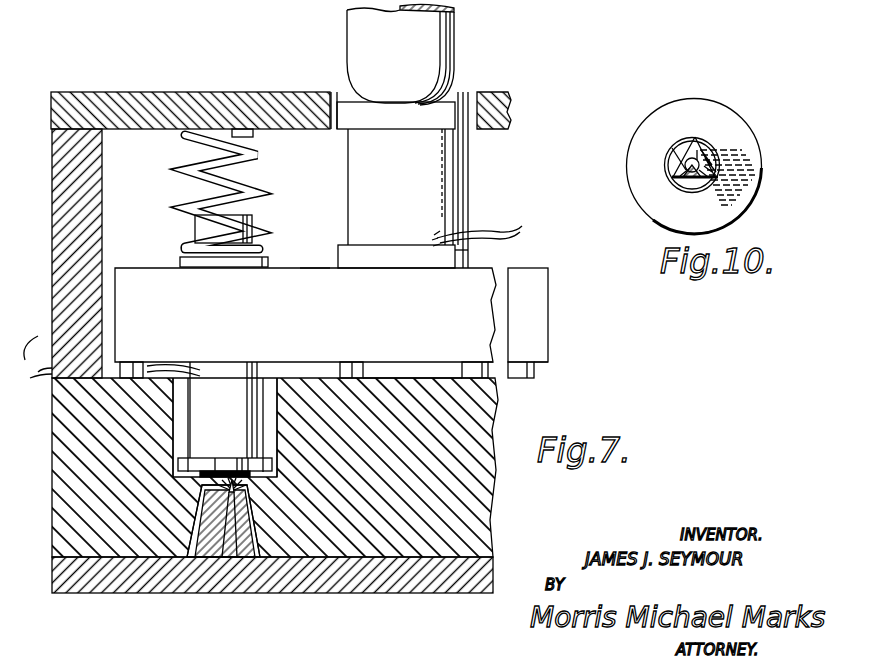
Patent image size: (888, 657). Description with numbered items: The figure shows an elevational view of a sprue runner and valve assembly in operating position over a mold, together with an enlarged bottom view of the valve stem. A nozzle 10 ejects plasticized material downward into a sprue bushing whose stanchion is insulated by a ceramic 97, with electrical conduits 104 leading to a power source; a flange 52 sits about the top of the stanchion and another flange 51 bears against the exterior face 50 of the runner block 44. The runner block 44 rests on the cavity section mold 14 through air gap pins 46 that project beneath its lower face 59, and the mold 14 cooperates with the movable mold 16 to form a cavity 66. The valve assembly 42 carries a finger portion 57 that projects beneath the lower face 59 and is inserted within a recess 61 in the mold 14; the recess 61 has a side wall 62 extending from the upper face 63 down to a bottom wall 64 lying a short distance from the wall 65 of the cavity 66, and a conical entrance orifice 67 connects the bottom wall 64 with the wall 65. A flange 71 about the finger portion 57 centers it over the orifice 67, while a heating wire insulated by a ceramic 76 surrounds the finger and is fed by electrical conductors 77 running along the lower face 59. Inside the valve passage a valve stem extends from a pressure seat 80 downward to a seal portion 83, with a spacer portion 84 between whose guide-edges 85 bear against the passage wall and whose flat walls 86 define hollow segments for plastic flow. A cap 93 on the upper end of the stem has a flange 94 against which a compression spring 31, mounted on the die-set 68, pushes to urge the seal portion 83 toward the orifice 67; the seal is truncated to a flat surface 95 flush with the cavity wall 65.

In FIG. 7, the nozzle 10 is at (456, 31).
In FIG. 7, the flange 52 is at (457, 131).
In FIG. 7, the ceramic 97 is at (447, 181).
In FIG. 7, the electrical conduits 104 is at (503, 224).
In FIG. 7, the compression spring 31 is at (262, 151).
In FIG. 7, the cap 93 is at (255, 217).
In FIG. 7, the flange 94 is at (267, 262).
In FIG. 10, the flange 94 is at (752, 160).
In FIG. 7, the exterior face 50 is at (316, 264).
In FIG. 7, the flange 51 is at (467, 259).
In FIG. 7, the runner block 44 is at (483, 278).
In FIG. 7, the die-set 68 is at (64, 201).
In FIG. 7, the electrical conductors 77 is at (30, 364).
In FIG. 7, the valve assembly 42 is at (205, 399).
In FIG. 7, the recess 61 is at (182, 413).
In FIG. 7, the side wall 62 is at (182, 433).
In FIG. 7, the flange 71 is at (182, 468).
In FIG. 7, the entrance orifice 67 is at (215, 484).
In FIG. 7, the finger portion 57 is at (230, 396).
In FIG. 7, the ceramic 76 is at (258, 386).
In FIG. 7, the upper face 63 is at (425, 373).
In FIG. 7, the air gap pins 46 is at (490, 372).
In FIG. 7, the lower face 59 is at (542, 367).
In FIG. 7, the mold 14 is at (485, 481).
In FIG. 7, the movable mold 16 is at (490, 582).
In FIG. 7, the cavity 66 is at (211, 560).
In FIG. 7, the seal portion 83 is at (232, 560).
In FIG. 10, the seal portion 83 is at (715, 156).
In FIG. 7, the wall 65 is at (240, 560).
In FIG. 7, the bottom wall 64 is at (290, 530).
In FIG. 10, the pressure seat 80 is at (676, 150).
In FIG. 10, the guide-edges 85 is at (697, 150).
In FIG. 10, the spacer portion 84 is at (700, 160).
In FIG. 10, the flat walls 86 is at (668, 164).
In FIG. 10, the flat surface 95 is at (679, 190).